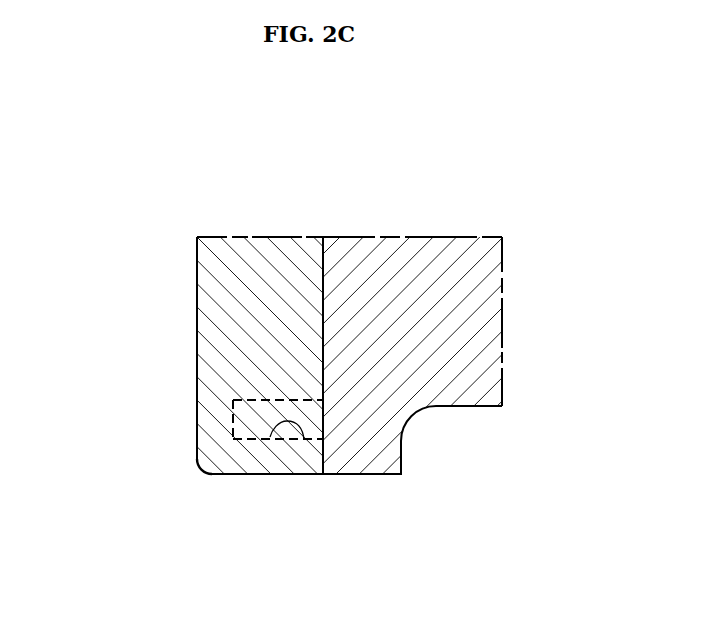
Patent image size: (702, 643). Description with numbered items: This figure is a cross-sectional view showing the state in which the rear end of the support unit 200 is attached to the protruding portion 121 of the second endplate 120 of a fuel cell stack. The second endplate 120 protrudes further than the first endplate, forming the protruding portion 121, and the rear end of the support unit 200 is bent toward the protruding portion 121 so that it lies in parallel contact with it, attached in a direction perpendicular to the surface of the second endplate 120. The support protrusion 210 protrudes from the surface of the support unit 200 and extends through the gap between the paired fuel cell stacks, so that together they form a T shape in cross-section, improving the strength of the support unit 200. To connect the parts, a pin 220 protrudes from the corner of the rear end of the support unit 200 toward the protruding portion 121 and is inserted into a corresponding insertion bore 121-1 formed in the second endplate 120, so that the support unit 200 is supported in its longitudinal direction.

The second endplate 120 is at (221, 273).
The protruding portion 121 is at (220, 477).
The insertion bore 121-1 is at (304, 440).
The support unit 200 is at (383, 454).
The support protrusion 210 is at (415, 273).
The pin 220 is at (255, 398).